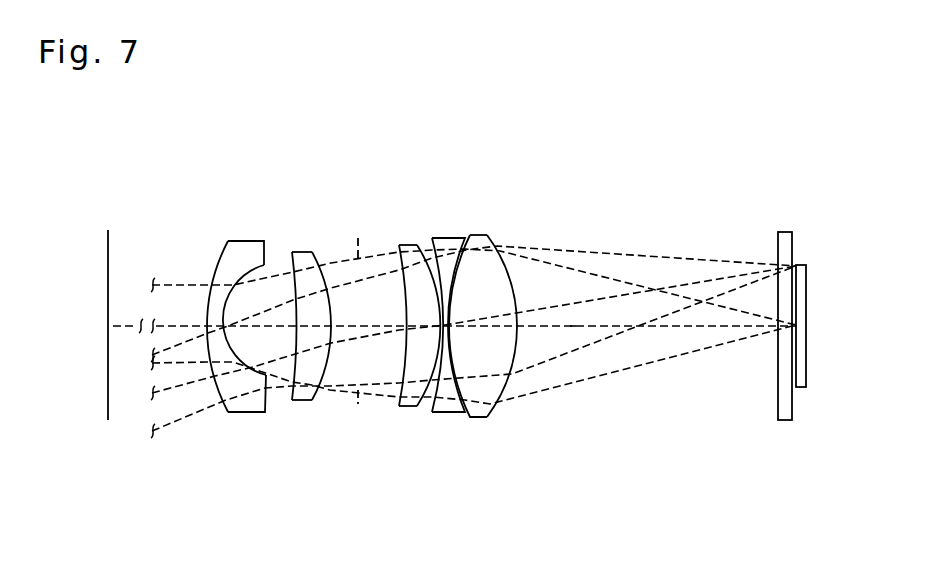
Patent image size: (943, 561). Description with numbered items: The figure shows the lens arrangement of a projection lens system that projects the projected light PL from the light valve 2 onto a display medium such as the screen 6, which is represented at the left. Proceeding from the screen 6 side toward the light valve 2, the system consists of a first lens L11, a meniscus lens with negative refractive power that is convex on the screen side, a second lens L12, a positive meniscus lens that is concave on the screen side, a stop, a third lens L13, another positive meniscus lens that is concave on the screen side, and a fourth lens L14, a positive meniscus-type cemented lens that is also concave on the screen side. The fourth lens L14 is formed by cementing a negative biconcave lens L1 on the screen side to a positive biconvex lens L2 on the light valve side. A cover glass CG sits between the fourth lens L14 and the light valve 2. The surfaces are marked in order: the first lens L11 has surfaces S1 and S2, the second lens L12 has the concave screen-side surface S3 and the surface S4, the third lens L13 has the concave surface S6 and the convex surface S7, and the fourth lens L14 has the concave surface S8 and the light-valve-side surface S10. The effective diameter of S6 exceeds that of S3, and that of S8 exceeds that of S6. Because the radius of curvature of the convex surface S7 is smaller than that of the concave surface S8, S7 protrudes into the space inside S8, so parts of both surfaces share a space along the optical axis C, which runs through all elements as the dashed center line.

The screen 6 is at (110, 240).
The projected light PL is at (168, 286).
The first lens L11 is at (222, 352).
The second lens L12 is at (299, 343).
The element stop is at (358, 237).
The third lens L13 is at (389, 341).
The fourth lens L14 is at (473, 315).
The negative biconcave lens L1 is at (448, 333).
The positive biconvex lens L2 is at (489, 333).
The optical axis C is at (573, 326).
The cover glass CG is at (787, 238).
The light valve 2 is at (798, 265).
The screen-side surface of the first lens S1 is at (220, 387).
The light-valve-side surface of the first lens S2 is at (267, 385).
The concave surface of the second lens S3 is at (292, 362).
The light-valve-side surface of the second lens S4 is at (328, 378).
The concave surface of the third lens S6 is at (401, 370).
The convex surface of the third lens S7 is at (425, 392).
The concave surface of the fourth lens S8 is at (436, 388).
The light-valve-side surface of the fourth lens S10 is at (503, 393).